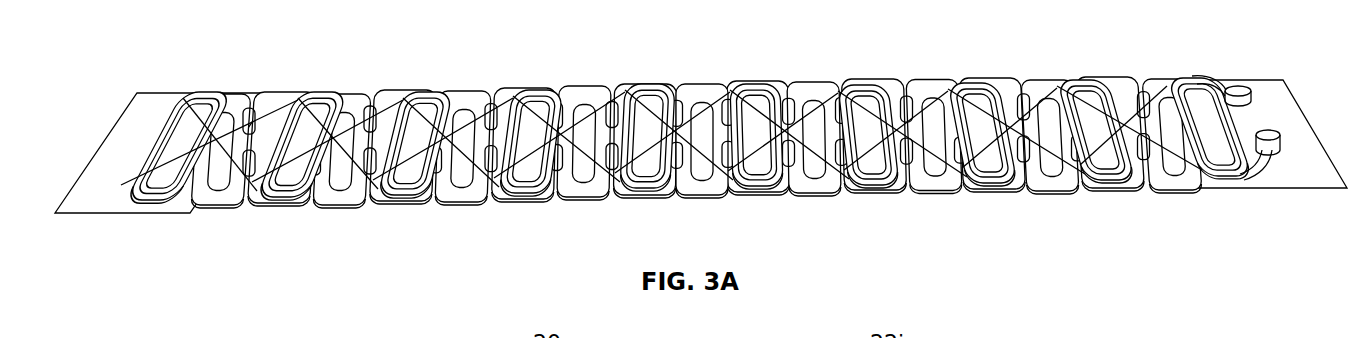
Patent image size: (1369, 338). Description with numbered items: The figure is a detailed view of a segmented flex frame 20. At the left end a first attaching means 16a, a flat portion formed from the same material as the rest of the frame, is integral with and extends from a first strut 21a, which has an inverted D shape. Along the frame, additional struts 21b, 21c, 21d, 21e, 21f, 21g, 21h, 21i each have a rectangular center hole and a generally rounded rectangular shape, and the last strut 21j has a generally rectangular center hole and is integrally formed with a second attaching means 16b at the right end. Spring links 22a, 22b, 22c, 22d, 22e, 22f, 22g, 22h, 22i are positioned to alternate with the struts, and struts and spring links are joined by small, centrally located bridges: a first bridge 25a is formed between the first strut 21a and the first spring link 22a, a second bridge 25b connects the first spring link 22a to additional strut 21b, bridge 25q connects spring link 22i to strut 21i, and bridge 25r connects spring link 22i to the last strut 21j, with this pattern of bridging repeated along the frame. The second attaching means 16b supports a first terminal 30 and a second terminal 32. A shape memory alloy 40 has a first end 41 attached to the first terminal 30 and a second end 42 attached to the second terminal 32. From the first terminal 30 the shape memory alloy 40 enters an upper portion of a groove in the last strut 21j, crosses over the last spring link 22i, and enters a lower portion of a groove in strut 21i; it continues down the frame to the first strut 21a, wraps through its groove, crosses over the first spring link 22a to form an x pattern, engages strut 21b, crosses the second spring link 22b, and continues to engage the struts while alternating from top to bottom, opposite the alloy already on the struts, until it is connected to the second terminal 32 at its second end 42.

The first attaching means 16a is at (122, 133).
The second attaching means 16b is at (1308, 145).
The segmented flex frame 20 is at (641, 72).
The first strut 21a is at (206, 90).
The additional strut 21b is at (323, 92).
The additional strut 21c is at (415, 145).
The additional strut 21d is at (531, 143).
The additional strut 21e is at (647, 137).
The additional strut 21f is at (756, 136).
The additional strut 21g is at (868, 136).
The additional strut 21h is at (983, 134).
The additional strut 21i is at (1082, 82).
The last strut 21j is at (1175, 78).
The first spring link 22a is at (268, 95).
The second spring link 22b is at (383, 93).
The spring link 22c is at (463, 148).
The spring link 22d is at (584, 143).
The spring link 22e is at (702, 141).
The spring link 22f is at (814, 139).
The spring link 22g is at (934, 137).
The spring link 22h is at (1013, 90).
The last spring link 22i is at (1127, 90).
The first bridge 25a is at (223, 143).
The second bridge 25b is at (270, 143).
The bridge 25q is at (1165, 140).
The bridge 25r is at (1203, 163).
The first terminal 30 is at (1243, 88).
The second terminal 32 is at (1270, 132).
The shape memory alloy 40 is at (940, 90).
The first end 41 is at (1210, 78).
The second end 42 is at (1290, 170).